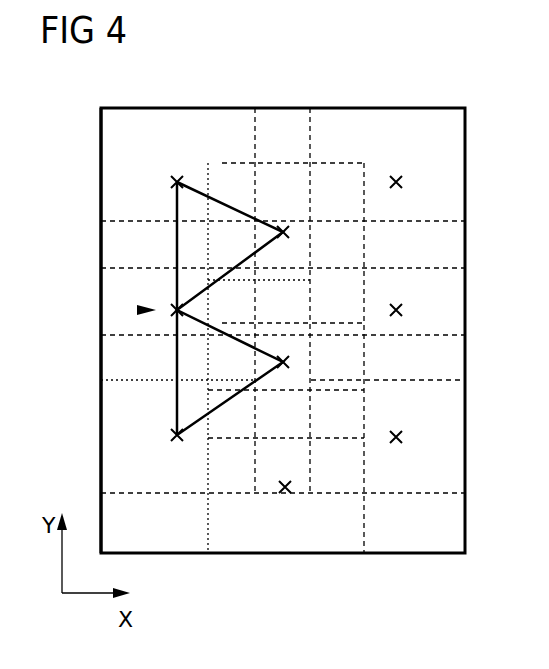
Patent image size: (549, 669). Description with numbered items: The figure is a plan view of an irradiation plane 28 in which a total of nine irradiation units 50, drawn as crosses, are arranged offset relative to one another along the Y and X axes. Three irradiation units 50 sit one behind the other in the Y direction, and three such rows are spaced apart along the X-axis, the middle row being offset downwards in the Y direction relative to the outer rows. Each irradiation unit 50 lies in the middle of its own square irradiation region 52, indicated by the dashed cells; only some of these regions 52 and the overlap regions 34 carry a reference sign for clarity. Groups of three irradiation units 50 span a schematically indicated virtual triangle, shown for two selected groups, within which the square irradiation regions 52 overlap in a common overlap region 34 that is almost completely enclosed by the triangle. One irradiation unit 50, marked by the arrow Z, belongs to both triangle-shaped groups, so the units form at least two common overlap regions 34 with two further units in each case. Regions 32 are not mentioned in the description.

The irradiation plane 28 is at (386, 108).
The region / cell of the work surface 32 is at (158, 250).
The common overlap region 34 is at (236, 242).
The irradiation unit 50 is at (177, 182).
The irradiation region 52 is at (110, 131).
The arrow Z is at (140, 310).